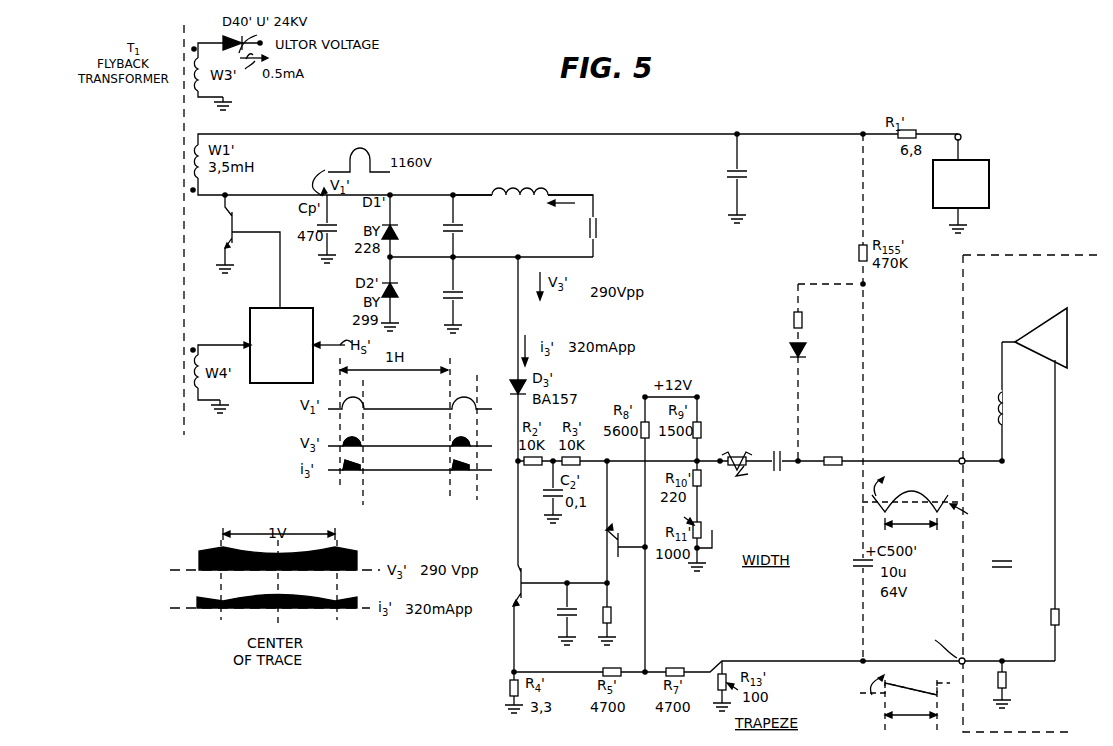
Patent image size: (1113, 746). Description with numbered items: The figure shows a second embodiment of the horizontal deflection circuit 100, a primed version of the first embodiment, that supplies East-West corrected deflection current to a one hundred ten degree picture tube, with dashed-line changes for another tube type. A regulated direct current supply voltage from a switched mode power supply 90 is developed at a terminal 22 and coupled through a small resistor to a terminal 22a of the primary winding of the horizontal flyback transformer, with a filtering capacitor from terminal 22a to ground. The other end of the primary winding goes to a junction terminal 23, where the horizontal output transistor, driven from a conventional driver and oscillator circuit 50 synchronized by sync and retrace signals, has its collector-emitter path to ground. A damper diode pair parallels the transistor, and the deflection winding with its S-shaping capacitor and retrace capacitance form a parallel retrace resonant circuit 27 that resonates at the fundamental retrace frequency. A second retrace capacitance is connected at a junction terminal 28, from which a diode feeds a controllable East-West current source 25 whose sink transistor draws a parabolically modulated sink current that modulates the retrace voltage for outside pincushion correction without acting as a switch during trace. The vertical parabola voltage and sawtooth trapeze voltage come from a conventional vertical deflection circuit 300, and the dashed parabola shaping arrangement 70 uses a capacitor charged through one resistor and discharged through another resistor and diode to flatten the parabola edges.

The terminal of primary winding 22a is at (739, 134).
The terminal 22 is at (958, 134).
The switched mode power supply 90 is at (990, 185).
The junction terminal 23 is at (235, 200).
The driver and oscillator circuit 50 is at (288, 308).
The junction terminal 28 is at (452, 260).
The deflection circuit 100 is at (467, 305).
The parallel retrace resonant circuit 27 is at (546, 206).
The controllable East-West current source 25 is at (567, 566).
The parabola shaping arrangement 70 is at (787, 401).
The vertical deflection circuit 300 is at (960, 385).